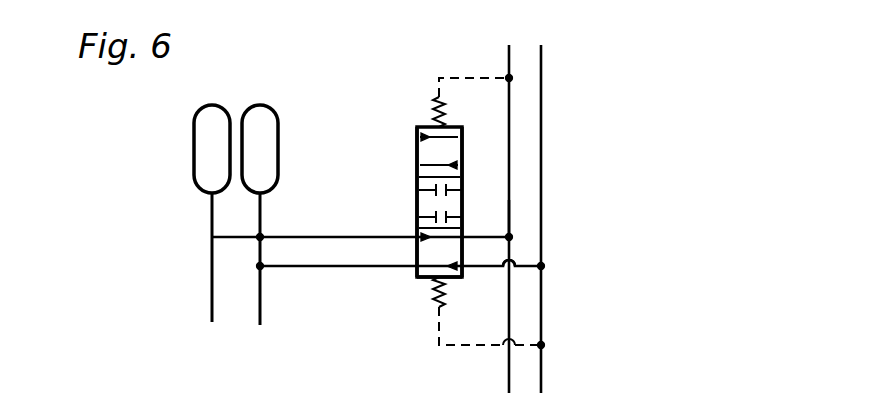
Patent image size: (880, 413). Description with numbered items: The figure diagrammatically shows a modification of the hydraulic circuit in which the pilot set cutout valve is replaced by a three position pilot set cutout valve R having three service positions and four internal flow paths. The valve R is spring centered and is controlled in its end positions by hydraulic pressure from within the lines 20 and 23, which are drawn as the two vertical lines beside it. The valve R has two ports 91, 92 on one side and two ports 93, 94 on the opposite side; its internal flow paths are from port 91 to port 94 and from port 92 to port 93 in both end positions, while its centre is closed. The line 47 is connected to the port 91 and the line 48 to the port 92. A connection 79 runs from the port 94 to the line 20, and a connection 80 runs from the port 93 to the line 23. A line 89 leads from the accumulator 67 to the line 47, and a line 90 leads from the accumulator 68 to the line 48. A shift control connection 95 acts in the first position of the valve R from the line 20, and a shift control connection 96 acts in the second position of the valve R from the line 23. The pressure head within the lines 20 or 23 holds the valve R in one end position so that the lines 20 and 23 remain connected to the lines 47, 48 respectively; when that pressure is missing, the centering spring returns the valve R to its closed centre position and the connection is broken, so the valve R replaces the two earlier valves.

The line 20 is at (544, 150).
The line 23 is at (507, 108).
The line 47 is at (311, 268).
The line 48 is at (335, 236).
The accumulator 67 is at (279, 154).
The accumulator 68 is at (193, 146).
The flow line connection 79 is at (492, 273).
The flow line connection 80 is at (497, 236).
The flow line connection 89 is at (262, 214).
The flow line connection 90 is at (210, 216).
The port 91 is at (412, 268).
The port 92 is at (416, 236).
The port 93 is at (463, 238).
The port 94 is at (463, 270).
The shift control line 95 is at (470, 348).
The shift control line 96 is at (462, 76).
The three position pilot set cutout valve R is at (415, 151).